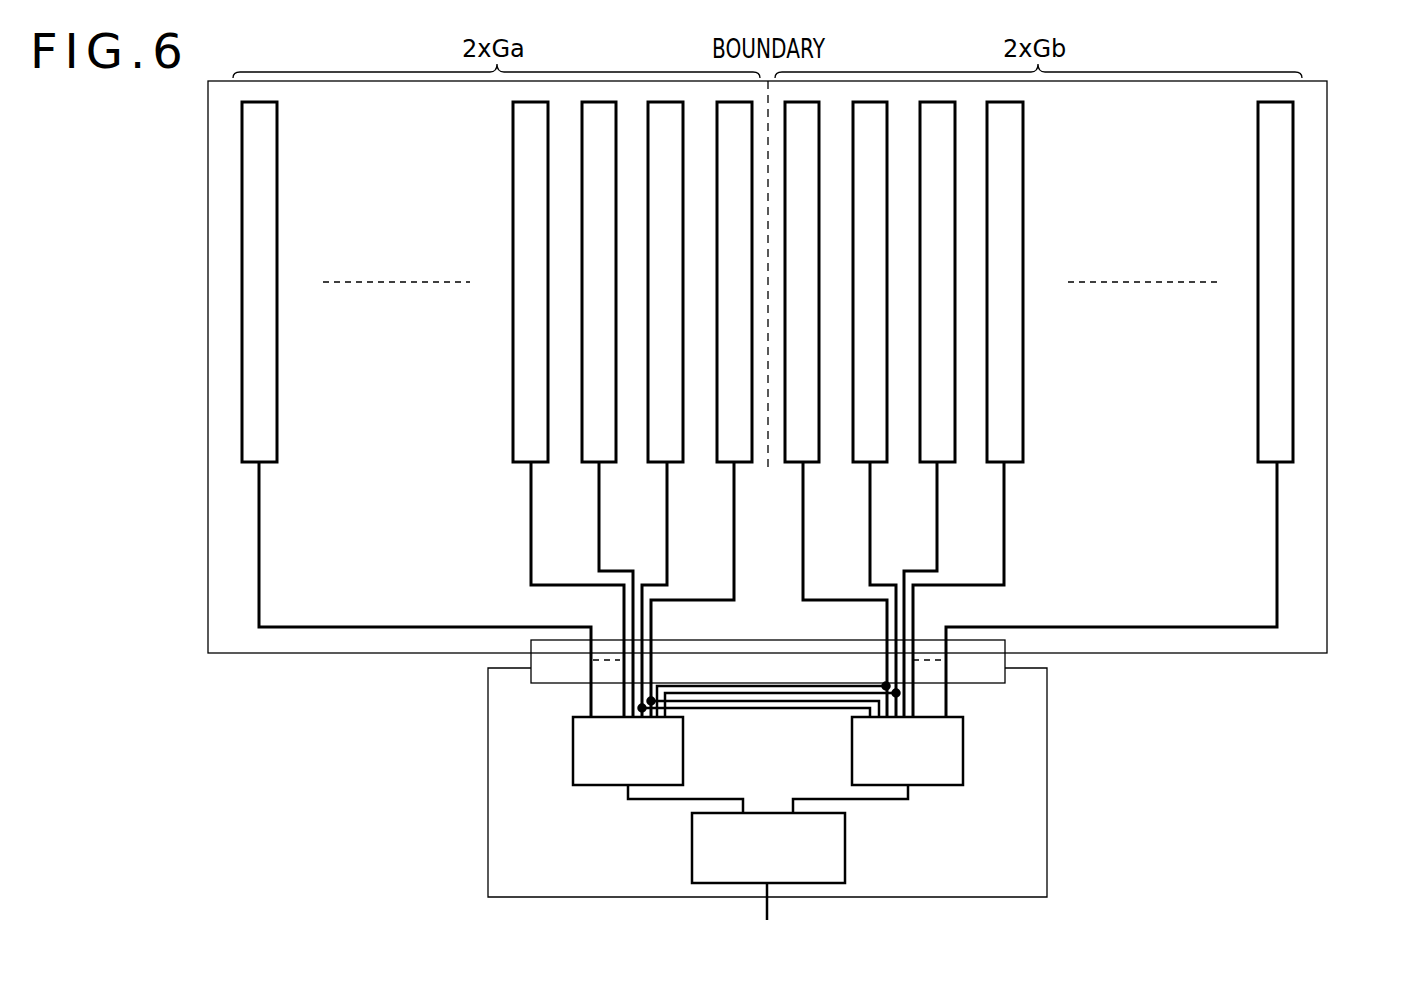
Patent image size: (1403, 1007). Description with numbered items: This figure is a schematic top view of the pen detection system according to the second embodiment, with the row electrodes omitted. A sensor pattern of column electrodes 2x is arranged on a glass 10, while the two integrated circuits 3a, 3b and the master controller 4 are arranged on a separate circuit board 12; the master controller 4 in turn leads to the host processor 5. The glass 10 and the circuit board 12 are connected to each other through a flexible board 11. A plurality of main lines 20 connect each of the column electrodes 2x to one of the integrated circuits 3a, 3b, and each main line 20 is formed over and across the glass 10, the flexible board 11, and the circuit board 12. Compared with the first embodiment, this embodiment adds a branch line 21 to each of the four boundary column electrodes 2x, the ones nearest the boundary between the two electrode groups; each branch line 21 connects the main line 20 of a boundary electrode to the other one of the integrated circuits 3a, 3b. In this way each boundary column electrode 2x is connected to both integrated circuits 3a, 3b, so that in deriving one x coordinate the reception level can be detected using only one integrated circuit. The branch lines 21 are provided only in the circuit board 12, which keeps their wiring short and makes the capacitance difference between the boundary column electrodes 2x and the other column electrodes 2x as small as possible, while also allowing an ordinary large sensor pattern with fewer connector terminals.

The column electrodes 2x is at (222, 193).
The glass 10 is at (1327, 355).
The main lines 20 is at (241, 484).
The flexible board 11 is at (1005, 660).
The circuit board 12 is at (1047, 775).
The integrated circuit 3a is at (573, 752).
The integrated circuit 3b is at (963, 750).
The branch line 21 is at (769, 688).
The master controller 4 is at (845, 845).
The host processor 5 is at (767, 918).